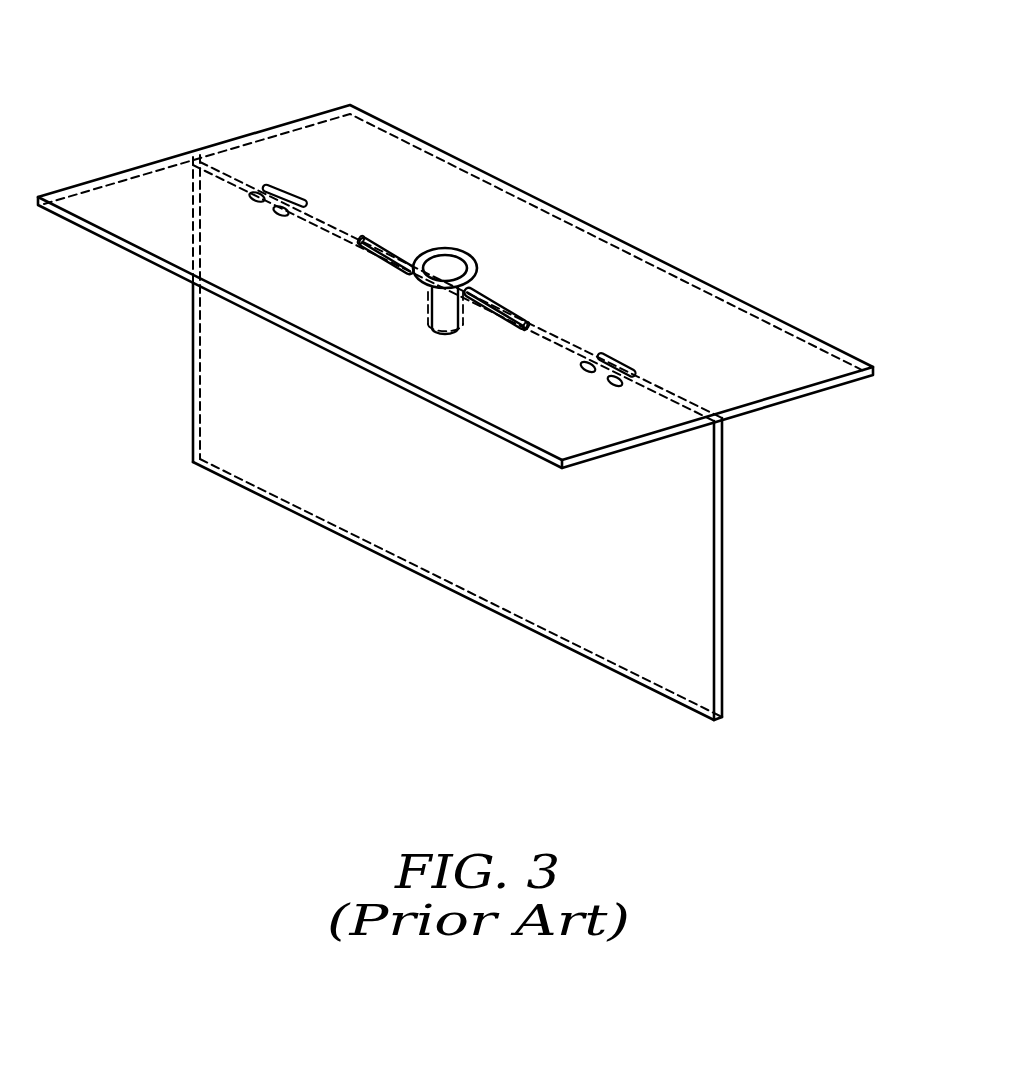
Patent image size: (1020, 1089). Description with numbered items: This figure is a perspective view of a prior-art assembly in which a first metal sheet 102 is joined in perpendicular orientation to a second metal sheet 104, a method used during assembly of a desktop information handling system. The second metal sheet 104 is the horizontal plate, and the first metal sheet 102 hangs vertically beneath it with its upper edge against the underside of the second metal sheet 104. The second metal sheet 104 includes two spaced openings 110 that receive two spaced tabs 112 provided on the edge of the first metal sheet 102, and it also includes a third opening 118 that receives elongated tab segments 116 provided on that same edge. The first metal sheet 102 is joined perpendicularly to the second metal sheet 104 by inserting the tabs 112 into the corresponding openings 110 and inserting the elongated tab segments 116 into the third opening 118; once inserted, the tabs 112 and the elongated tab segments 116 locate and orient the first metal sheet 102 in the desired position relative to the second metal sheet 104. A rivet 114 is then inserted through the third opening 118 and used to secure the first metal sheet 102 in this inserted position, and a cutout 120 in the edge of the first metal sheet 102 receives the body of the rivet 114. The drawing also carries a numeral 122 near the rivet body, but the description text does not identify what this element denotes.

The first metal sheet 102 is at (725, 540).
The second metal sheet 104 is at (825, 395).
The spaced openings 110 is at (312, 197).
The spaced tabs 112 is at (283, 187).
The rivet 114 is at (467, 248).
The elongated tab segments 116 is at (367, 252).
The third opening 118 is at (357, 238).
The cutout 120 is at (447, 335).
The collar 122 is at (432, 330).